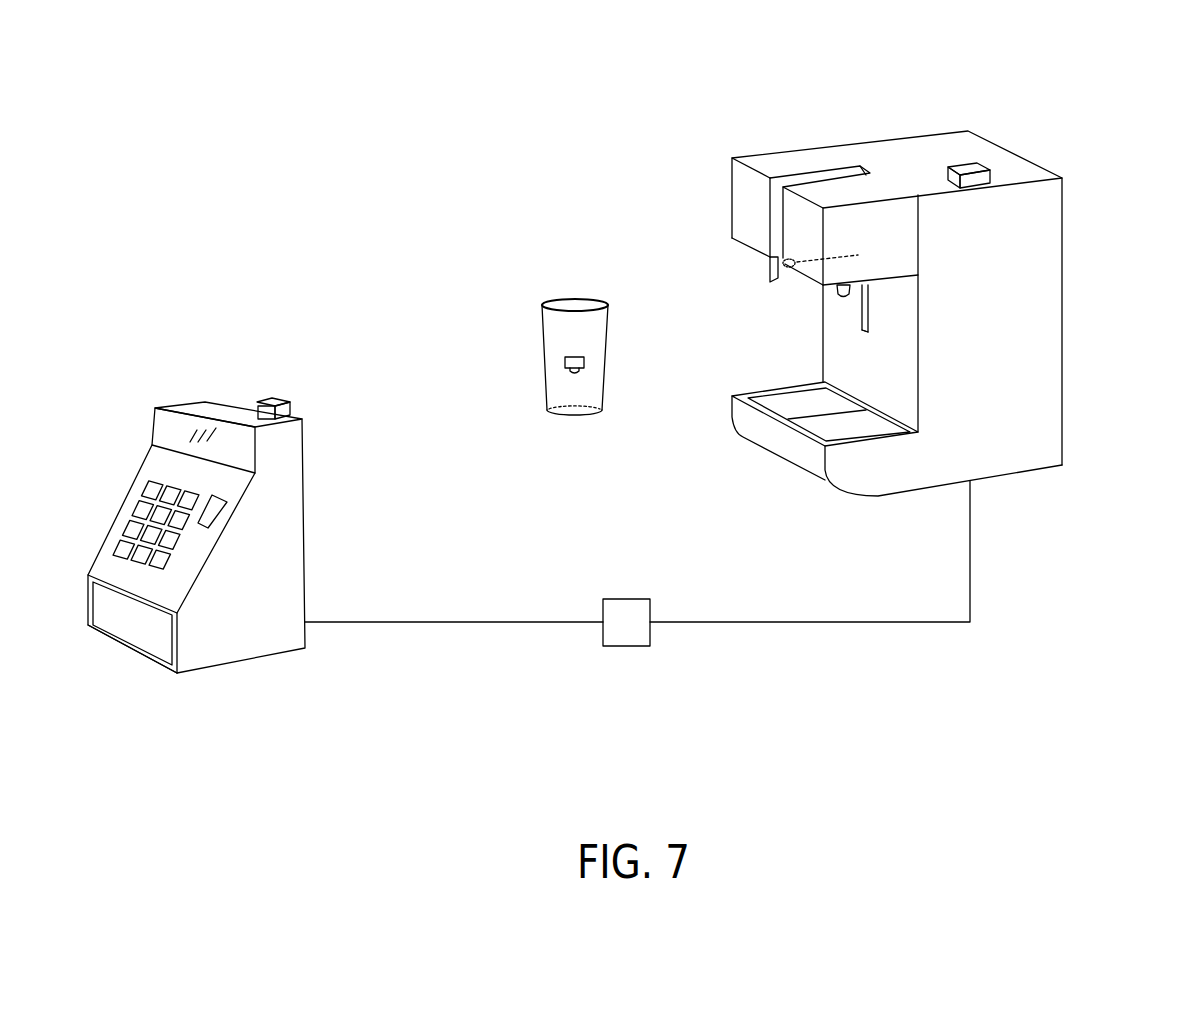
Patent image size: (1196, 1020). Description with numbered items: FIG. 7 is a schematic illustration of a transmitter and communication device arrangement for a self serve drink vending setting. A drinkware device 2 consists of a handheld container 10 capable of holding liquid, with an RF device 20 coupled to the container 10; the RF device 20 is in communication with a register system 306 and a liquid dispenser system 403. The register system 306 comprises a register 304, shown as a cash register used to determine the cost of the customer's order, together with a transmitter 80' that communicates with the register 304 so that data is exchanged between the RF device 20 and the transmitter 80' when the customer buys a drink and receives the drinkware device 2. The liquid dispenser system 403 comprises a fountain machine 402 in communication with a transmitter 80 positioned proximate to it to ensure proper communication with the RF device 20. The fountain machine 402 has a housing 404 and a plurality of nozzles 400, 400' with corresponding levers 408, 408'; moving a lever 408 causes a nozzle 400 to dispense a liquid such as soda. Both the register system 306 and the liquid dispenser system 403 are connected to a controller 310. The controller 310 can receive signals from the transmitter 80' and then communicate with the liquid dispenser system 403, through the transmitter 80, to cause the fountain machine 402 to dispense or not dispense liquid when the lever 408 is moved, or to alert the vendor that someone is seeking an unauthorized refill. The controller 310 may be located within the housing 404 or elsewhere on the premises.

The drinkware device 2 is at (545, 268).
The container 10 is at (602, 393).
The RF device 20 is at (573, 372).
The transmitter 80 is at (1005, 128).
The transmitter 80' is at (275, 378).
The register 304 is at (238, 662).
The register system 306 is at (322, 670).
The controller 310 is at (625, 647).
The nozzle 400 is at (806, 310).
The nozzle 400' is at (716, 297).
The fountain machine 402 is at (1063, 215).
The liquid dispenser system 403 is at (1085, 415).
The housing 404 is at (1063, 319).
The lever 408 is at (793, 348).
The lever 408' is at (712, 277).